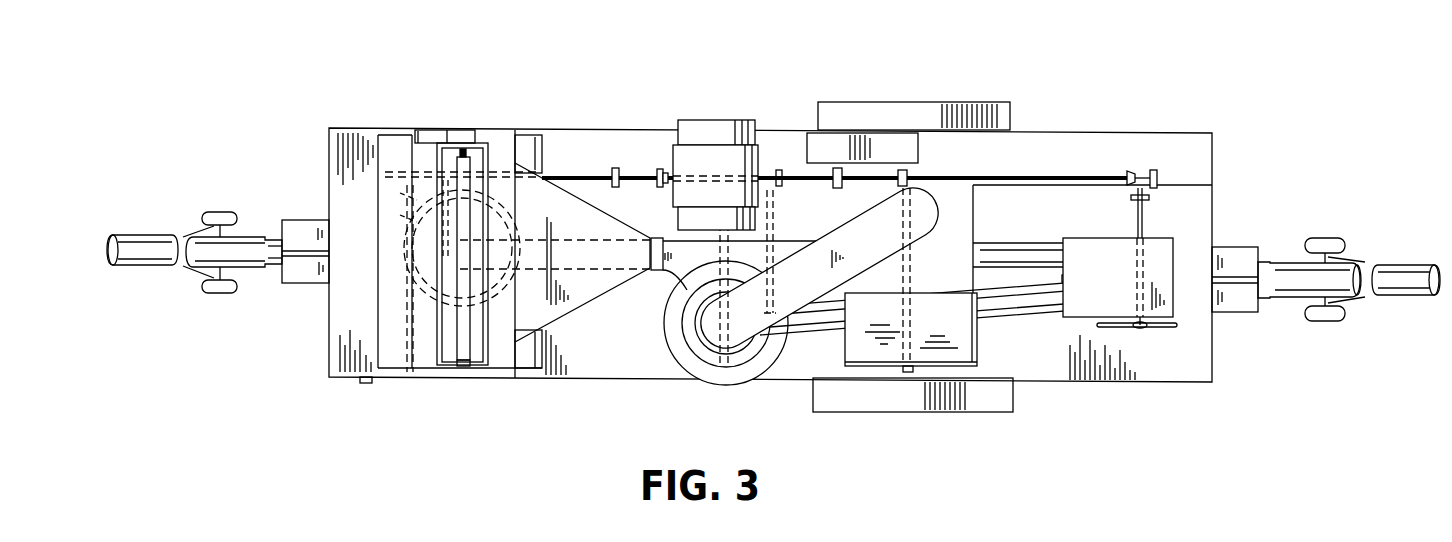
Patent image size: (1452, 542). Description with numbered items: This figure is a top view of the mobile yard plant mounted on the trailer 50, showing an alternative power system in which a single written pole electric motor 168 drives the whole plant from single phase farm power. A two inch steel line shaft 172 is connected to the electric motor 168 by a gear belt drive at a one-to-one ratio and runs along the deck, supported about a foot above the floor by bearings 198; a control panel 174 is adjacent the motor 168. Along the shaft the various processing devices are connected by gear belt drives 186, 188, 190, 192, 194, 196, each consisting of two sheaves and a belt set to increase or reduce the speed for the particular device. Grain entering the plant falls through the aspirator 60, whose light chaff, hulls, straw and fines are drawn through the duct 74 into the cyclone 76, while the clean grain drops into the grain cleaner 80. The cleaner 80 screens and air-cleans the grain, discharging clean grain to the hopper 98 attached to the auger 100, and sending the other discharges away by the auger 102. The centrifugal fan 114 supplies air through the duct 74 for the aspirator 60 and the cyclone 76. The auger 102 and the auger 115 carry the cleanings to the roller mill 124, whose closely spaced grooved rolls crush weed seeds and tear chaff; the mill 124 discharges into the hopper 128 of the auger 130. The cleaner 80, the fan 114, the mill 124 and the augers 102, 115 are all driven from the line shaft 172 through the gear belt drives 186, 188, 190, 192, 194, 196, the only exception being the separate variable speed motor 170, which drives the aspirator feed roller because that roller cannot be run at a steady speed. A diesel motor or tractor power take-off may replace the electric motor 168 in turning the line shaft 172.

The trailer 50 is at (627, 128).
The aspirator 60 is at (408, 150).
The duct 74 is at (578, 312).
The cyclone 76 is at (712, 386).
The grain cleaner 80 is at (390, 380).
The hopper 98 is at (297, 226).
The auger 100 is at (137, 240).
The auger 102 is at (1032, 260).
The centrifugal fan 114 is at (875, 348).
The auger 115 is at (1032, 298).
The roller mill 124 is at (1226, 250).
The hopper 128 is at (1236, 247).
The auger 130 is at (1387, 265).
The electric motor 168 is at (717, 122).
The motor 170 is at (438, 140).
The line shaft 172 is at (1016, 174).
The control panel 174 is at (882, 145).
The gear belt drive 186 is at (412, 314).
The gear belt drive 188 is at (410, 222).
The gear belt drive 190 is at (687, 275).
The gear belt drive 192 is at (818, 235).
The gear belt drive 194 is at (936, 232).
The gear belt drive 196 is at (1133, 220).
The bearings 198 is at (610, 168).